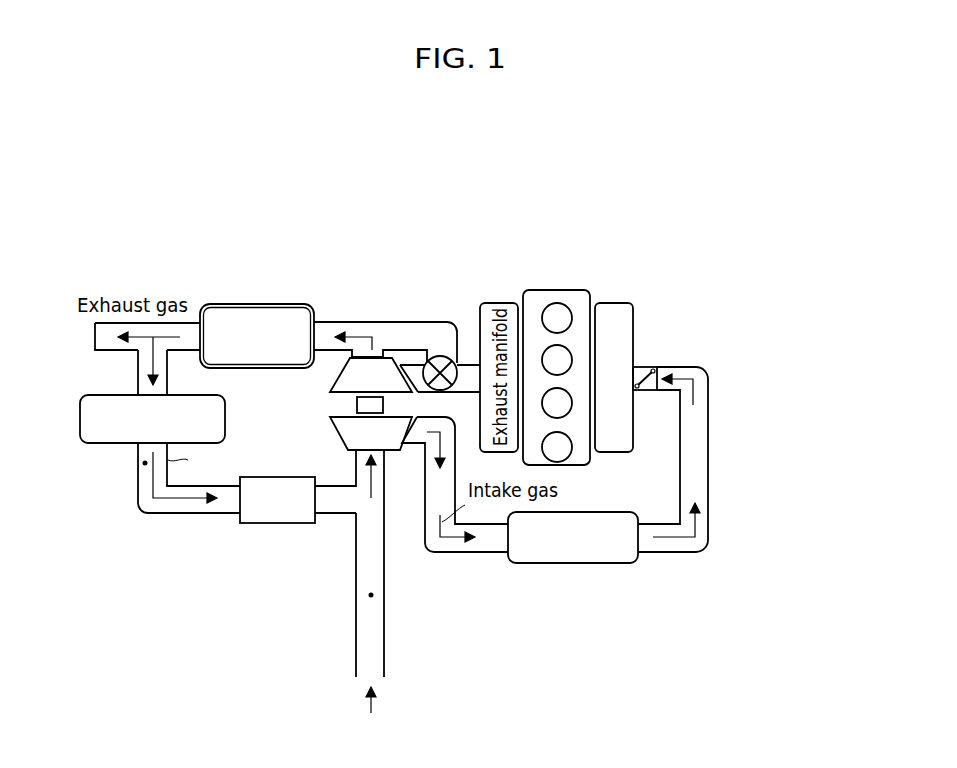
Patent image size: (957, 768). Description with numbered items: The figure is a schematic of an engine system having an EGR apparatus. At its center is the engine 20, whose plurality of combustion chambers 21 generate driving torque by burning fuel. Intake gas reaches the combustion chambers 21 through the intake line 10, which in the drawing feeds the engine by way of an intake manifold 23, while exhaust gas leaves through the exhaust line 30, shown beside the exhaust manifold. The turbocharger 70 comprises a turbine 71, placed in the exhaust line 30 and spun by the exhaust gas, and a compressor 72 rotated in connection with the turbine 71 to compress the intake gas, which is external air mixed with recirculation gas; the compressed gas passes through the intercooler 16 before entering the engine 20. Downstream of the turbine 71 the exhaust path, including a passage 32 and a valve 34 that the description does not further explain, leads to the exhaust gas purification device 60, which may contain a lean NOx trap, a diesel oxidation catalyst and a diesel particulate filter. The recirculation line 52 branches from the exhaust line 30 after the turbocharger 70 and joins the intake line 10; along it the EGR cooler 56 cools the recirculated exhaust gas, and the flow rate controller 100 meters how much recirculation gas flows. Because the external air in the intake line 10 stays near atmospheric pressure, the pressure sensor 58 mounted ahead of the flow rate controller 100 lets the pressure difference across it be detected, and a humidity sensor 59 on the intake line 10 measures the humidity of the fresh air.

The intake line 10 is at (385, 468).
The intercooler 16 is at (573, 563).
The engine 20 is at (600, 466).
The combustion chamber 21 is at (573, 400).
The intake manifold 23 is at (611, 303).
The exhaust line 30 is at (413, 367).
The exhaust line 32 is at (413, 322).
The wastegate valve 34 is at (439, 356).
The recirculation line 52 is at (138, 477).
The EGR cooler 56 is at (80, 443).
The pressure sensor 58 is at (145, 463).
The humidity sensor 59 is at (371, 595).
The exhaust gas purification device 60 is at (254, 304).
The turbocharger 70 is at (261, 383).
The turbine 71 is at (330, 385).
The compressor 72 is at (330, 418).
The flow rate controller 100 is at (295, 523).